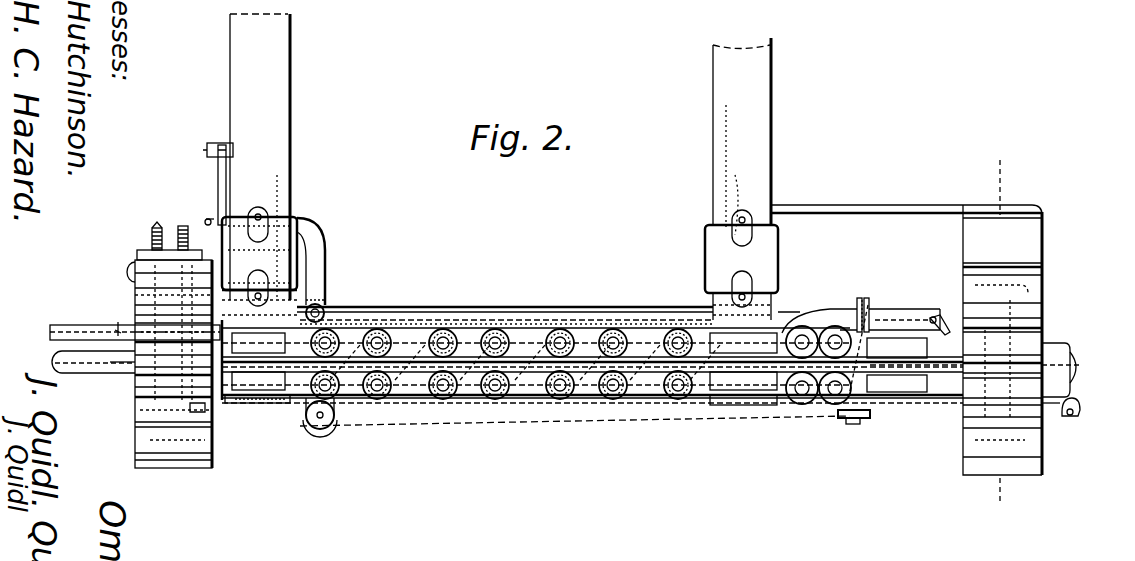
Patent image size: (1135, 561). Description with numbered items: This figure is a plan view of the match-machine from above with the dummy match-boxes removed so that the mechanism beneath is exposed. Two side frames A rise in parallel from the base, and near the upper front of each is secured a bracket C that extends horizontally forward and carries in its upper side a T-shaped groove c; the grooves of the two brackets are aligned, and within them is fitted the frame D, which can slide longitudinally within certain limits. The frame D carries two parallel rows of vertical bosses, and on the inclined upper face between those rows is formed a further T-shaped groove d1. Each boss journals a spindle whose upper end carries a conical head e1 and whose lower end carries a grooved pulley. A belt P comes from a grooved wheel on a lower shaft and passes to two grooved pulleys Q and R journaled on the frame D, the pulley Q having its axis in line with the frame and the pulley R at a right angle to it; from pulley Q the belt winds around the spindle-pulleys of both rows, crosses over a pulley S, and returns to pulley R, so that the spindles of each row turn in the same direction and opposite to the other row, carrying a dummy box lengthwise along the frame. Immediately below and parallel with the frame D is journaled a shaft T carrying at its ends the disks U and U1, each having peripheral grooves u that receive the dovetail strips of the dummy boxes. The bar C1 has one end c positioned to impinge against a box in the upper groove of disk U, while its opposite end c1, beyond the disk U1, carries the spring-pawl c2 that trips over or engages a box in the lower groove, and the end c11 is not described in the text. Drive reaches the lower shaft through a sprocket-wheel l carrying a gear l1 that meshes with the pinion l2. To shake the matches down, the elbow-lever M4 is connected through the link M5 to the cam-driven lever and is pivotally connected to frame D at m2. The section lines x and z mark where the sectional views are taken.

The link M5 is at (218, 178).
The elbow-lever M4 is at (323, 238).
The pivotal connection m2 is at (324, 308).
The sprocket-wheel l is at (157, 222).
The gear l1 is at (187, 221).
The pinion l2 is at (210, 410).
The disk U is at (135, 415).
The disk U1 is at (1043, 285).
The grooves u is at (1060, 342).
The section line x is at (566, 362).
The section line z is at (996, 330).
The bracket C is at (256, 402).
The bar C1 is at (90, 328).
The T-shaped groove c is at (118, 321).
The end of bar c1 is at (1058, 412).
The spring-pawl c2 is at (1080, 405).
The latch arm c11 is at (940, 318).
The side frame A is at (592, 341).
The frame D is at (417, 395).
The belt P is at (542, 405).
The conical head e1 is at (560, 330).
The T-shaped groove d1 is at (398, 366).
The pulley S is at (306, 420).
The grooved pulley Q is at (864, 300).
The grooved pulley R is at (862, 418).
The shaft T is at (1074, 352).